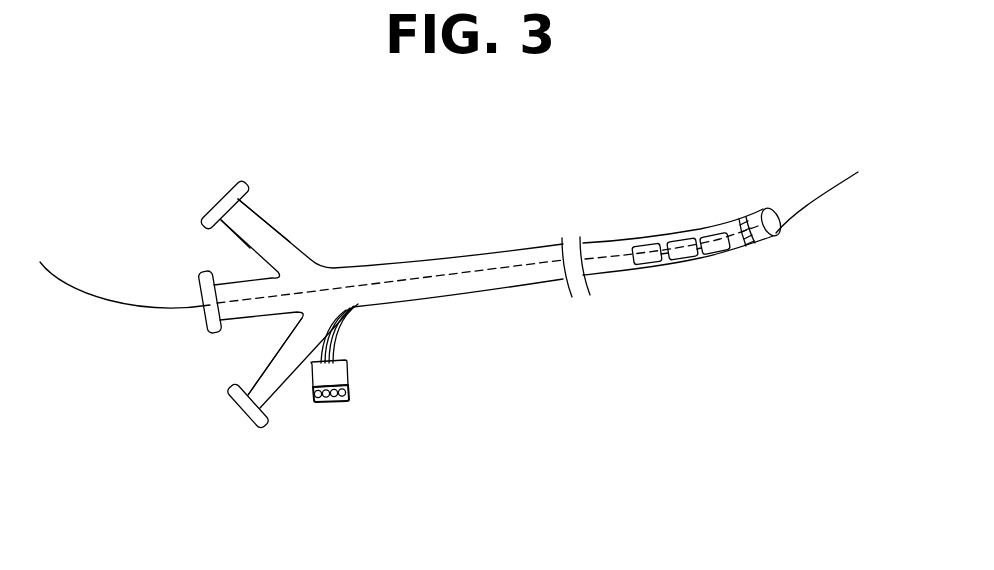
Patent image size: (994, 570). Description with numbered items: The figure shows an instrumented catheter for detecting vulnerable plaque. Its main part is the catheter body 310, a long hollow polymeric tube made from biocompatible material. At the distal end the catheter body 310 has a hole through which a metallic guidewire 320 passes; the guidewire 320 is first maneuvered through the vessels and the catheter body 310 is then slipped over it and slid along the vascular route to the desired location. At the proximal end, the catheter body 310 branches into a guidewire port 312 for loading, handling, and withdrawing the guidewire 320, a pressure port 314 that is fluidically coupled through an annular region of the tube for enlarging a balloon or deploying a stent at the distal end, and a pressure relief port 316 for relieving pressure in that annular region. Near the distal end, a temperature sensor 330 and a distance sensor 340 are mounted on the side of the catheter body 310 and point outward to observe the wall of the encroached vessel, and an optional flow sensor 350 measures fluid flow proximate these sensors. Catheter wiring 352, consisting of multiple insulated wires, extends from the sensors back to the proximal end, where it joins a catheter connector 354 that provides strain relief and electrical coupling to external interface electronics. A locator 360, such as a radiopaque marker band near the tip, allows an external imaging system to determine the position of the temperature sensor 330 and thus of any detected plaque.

The catheter body 310 is at (425, 260).
The guidewire port 312 is at (212, 331).
The pressure port 314 is at (288, 238).
The pressure relief port 316 is at (287, 383).
The guidewire 320 is at (808, 203).
The temperature sensor 330 is at (650, 262).
The distance sensor 340 is at (685, 258).
The flow sensor 350 is at (722, 252).
The catheter wiring 352 is at (335, 331).
The catheter connector 354 is at (348, 376).
The locator 360 is at (738, 220).